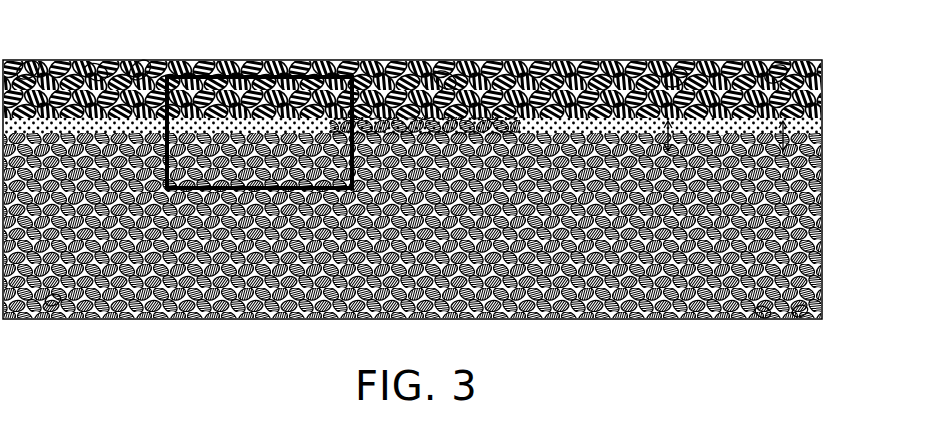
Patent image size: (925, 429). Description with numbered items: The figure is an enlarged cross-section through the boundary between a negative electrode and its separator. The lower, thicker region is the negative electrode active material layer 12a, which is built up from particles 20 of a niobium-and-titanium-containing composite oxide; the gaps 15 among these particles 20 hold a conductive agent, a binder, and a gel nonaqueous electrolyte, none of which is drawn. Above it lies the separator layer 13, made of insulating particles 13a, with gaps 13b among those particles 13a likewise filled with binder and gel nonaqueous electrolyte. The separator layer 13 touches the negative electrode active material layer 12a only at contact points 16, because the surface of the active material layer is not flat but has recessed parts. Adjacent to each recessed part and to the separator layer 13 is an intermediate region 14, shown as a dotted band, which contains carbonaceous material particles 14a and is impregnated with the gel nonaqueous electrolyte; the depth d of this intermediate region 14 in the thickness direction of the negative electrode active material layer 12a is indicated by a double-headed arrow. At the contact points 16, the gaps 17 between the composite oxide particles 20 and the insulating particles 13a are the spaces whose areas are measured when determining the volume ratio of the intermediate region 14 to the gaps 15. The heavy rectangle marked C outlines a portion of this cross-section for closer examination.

The negative electrode active material layer 12a is at (832, 150).
The separator layer 13 is at (832, 62).
The particles 13a is at (28, 62).
The gaps 13b is at (676, 70).
The intermediate region 14 is at (57, 80).
The carbonaceous material particles 14a is at (96, 66).
The gaps 15 is at (51, 305).
The contact points 16 is at (449, 74).
The gaps 17 is at (140, 62).
The particles 20 is at (800, 319).
The enlarged region C is at (284, 76).
The depth d is at (676, 136).